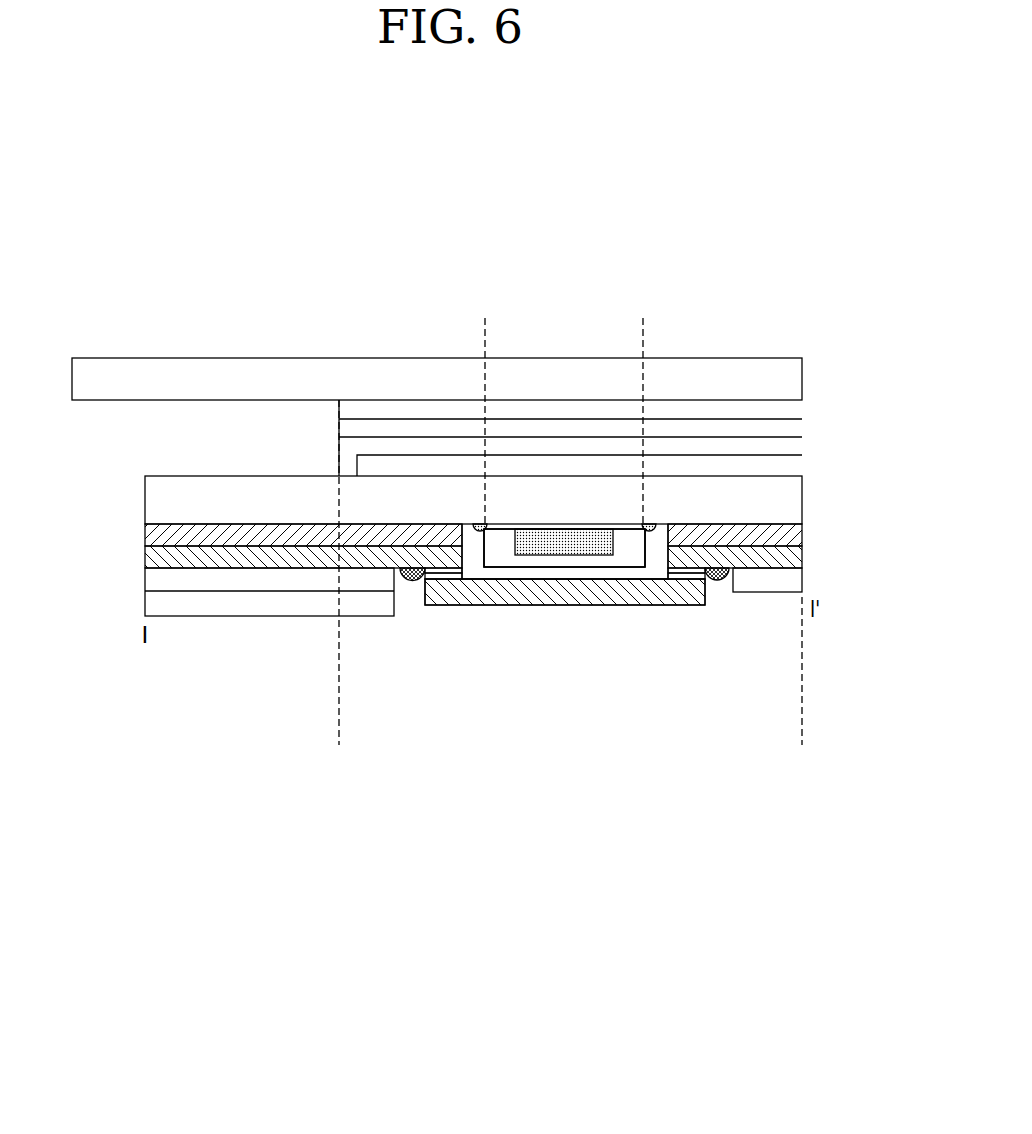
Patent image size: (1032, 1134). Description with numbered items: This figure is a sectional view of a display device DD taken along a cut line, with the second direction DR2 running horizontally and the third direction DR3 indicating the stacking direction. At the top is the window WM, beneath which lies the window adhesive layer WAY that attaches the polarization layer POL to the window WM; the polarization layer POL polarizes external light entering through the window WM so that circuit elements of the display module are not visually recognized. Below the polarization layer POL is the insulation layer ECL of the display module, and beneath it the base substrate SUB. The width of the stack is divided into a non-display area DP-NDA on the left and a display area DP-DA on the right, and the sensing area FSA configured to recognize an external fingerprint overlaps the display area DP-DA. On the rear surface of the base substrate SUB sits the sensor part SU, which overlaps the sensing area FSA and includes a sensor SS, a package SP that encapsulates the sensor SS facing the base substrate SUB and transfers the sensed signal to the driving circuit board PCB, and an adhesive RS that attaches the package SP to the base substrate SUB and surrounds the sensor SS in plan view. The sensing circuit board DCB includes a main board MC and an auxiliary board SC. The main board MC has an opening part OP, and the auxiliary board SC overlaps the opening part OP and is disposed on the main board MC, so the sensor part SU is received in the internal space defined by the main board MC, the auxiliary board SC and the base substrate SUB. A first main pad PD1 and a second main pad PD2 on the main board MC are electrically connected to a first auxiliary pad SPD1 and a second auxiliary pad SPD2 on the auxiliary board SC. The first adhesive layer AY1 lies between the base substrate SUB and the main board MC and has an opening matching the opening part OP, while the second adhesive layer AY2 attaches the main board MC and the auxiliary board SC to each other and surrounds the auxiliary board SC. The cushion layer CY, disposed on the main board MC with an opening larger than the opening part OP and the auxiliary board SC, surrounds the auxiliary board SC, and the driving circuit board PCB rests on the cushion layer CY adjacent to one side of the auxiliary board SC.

The display device DD is at (820, 287).
The window WM is at (790, 377).
The window adhesive layer WAY is at (790, 408).
The polarization layer POL is at (790, 430).
The insulation layer ECL is at (790, 447).
The base substrate SUB is at (790, 503).
The first adhesive layer AY1 is at (790, 537).
The cushion layer CY is at (790, 578).
The driving circuit board PCB is at (158, 603).
The opening part OP is at (468, 543).
The main board MC is at (668, 556).
The sensor SS is at (567, 537).
The package SP is at (621, 537).
The adhesive RS is at (649, 522).
The sensor part SU is at (792, 301).
The sensing area FSA is at (643, 327).
The second adhesive layer AY2 is at (413, 585).
The first main pad PD1 is at (436, 573).
The first auxiliary pad SPD1 is at (450, 582).
The auxiliary board SC is at (575, 596).
The second main pad PD2 is at (672, 582).
The second auxiliary pad SPD2 is at (703, 576).
The sensing circuit board DCB is at (558, 683).
The non-display area DP-NDA is at (339, 737).
The display area DP-DA is at (339, 737).
The third direction DR3 is at (90, 932).
The second direction DR2 is at (90, 932).